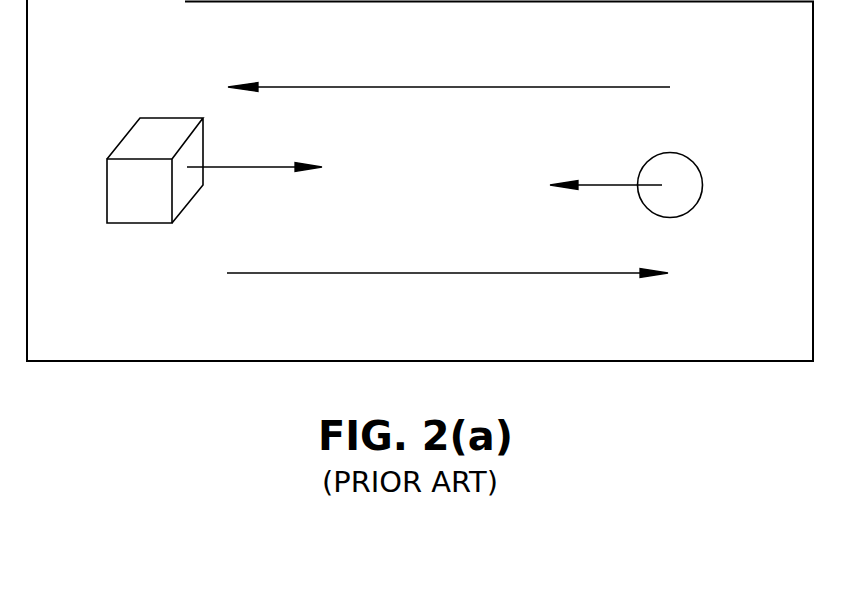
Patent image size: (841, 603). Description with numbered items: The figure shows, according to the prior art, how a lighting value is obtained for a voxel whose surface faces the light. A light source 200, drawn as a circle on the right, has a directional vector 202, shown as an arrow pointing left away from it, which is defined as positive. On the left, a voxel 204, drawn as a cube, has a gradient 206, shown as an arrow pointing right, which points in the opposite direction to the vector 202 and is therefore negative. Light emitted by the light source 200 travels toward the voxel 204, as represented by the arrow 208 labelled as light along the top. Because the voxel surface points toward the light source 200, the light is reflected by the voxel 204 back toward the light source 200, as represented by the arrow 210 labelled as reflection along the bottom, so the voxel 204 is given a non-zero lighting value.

The light source 200 is at (690, 157).
The directional vector 202 is at (607, 185).
The voxel 204 is at (158, 118).
The gradient 206 is at (252, 167).
The arrow 208 is at (574, 87).
The reflection path 210 is at (558, 275).